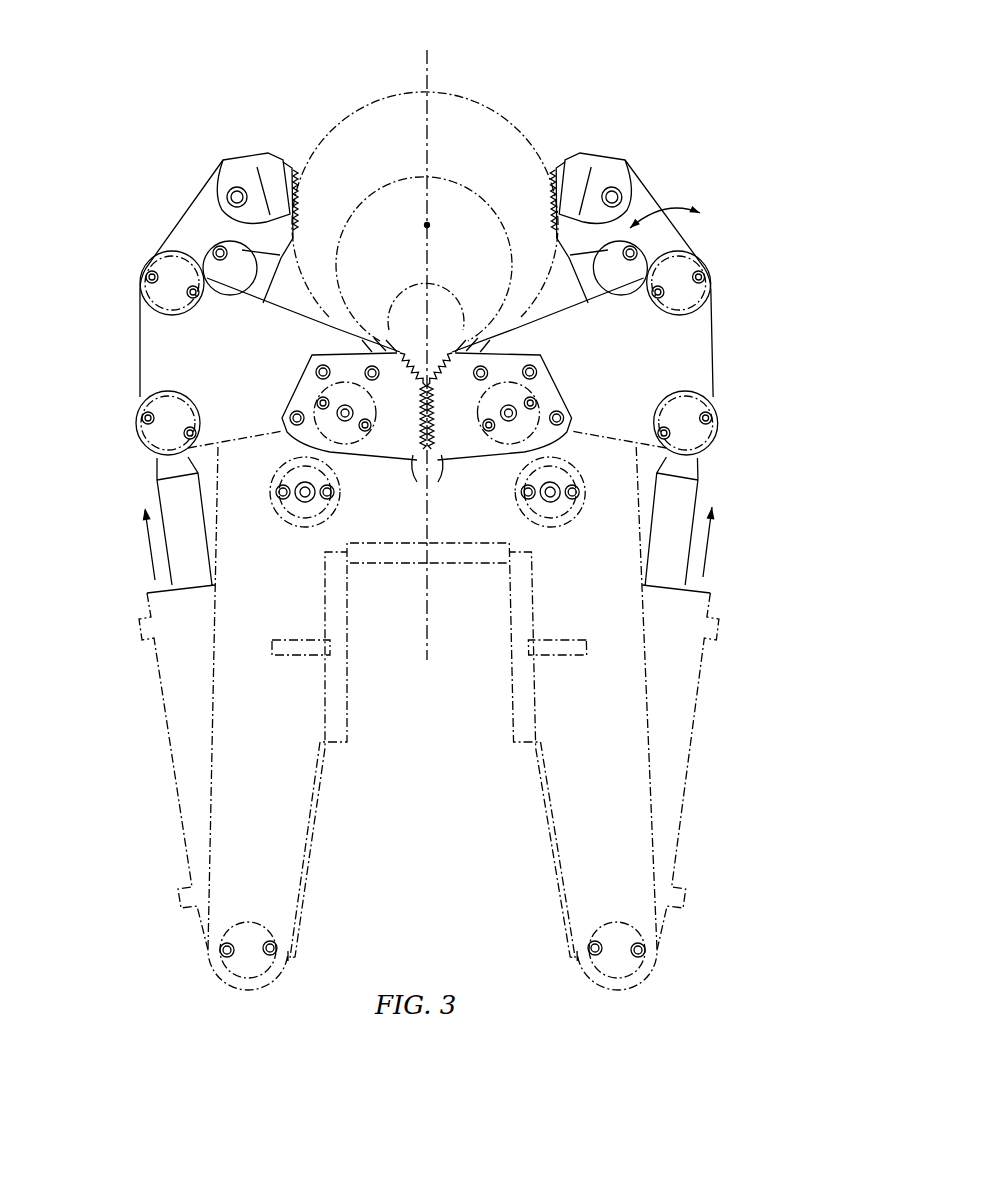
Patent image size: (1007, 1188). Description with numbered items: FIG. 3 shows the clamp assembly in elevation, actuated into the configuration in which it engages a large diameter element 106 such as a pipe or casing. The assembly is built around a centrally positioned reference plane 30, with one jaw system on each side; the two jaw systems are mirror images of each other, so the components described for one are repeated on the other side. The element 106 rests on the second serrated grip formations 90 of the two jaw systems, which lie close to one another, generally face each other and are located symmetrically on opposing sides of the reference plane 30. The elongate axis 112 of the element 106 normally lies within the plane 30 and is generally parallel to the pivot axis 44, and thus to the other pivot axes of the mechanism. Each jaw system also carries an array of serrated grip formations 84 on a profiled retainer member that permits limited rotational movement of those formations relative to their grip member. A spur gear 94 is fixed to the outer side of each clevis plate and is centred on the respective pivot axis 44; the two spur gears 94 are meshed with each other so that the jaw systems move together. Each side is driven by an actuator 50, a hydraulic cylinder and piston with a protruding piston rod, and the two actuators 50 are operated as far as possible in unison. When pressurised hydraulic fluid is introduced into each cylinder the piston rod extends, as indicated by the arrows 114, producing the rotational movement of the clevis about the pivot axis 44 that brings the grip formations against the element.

The reference plane 30 is at (432, 66).
The large diameter element 106 is at (522, 128).
The serrated grip formations 84 is at (558, 204).
The elongate axis 112 is at (455, 226).
The second serrated grip formations 90 is at (470, 337).
The pivot axis 44 is at (513, 407).
The spur gear 94 is at (417, 453).
The arrows 114 is at (431, 543).
The actuator 50 is at (175, 812).